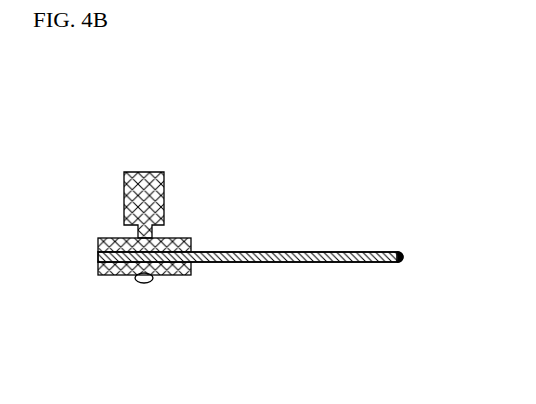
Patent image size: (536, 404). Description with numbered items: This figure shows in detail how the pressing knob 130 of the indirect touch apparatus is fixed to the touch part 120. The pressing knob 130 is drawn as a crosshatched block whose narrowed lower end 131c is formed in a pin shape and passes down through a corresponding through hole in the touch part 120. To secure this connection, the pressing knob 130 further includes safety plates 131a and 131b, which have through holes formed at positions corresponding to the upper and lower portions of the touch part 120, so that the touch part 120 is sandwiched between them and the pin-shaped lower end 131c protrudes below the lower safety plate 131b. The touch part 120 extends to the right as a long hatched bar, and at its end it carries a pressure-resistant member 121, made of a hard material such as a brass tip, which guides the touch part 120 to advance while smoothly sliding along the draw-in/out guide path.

The pressing knob 130 is at (151, 171).
The safety plate 131a is at (103, 238).
The safety plate 131b is at (102, 276).
The lower end of the pressing knob 131c is at (153, 285).
The touch part 120 is at (331, 251).
The pressure-resistant member 121 is at (404, 250).